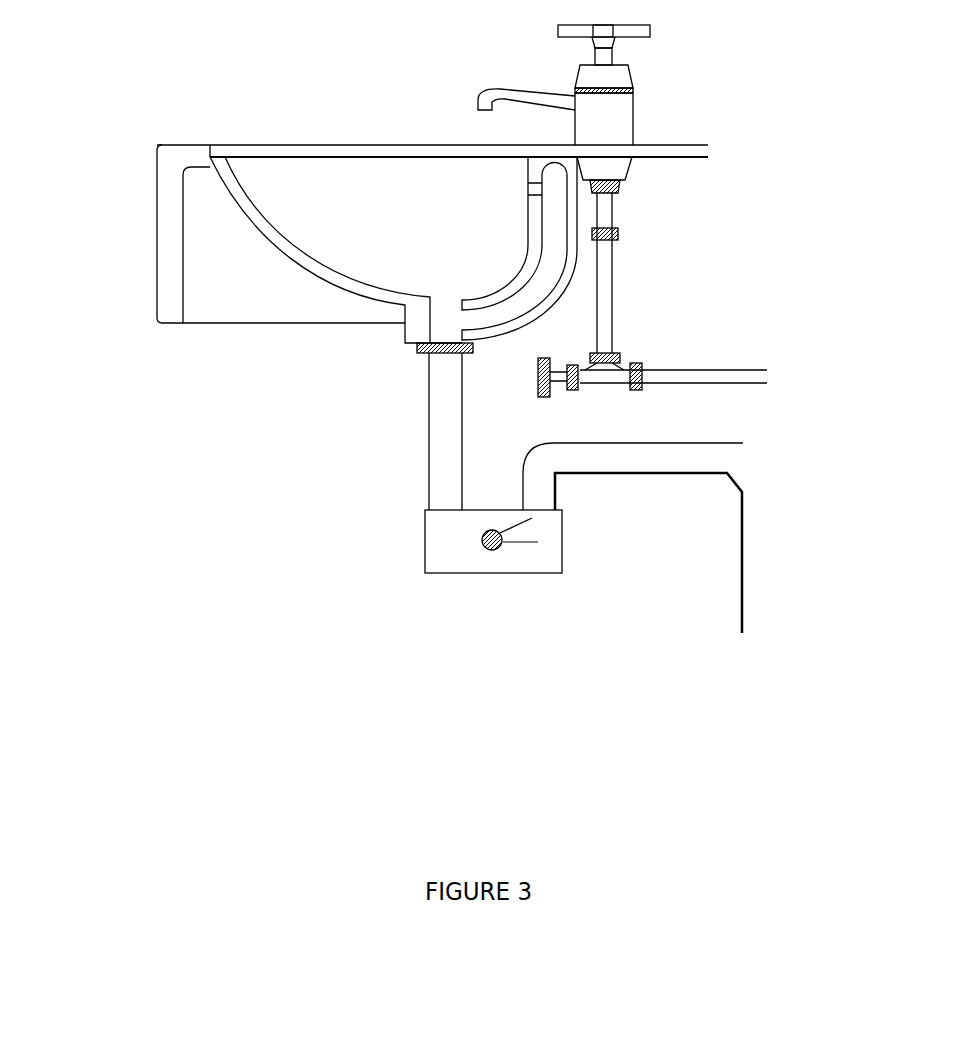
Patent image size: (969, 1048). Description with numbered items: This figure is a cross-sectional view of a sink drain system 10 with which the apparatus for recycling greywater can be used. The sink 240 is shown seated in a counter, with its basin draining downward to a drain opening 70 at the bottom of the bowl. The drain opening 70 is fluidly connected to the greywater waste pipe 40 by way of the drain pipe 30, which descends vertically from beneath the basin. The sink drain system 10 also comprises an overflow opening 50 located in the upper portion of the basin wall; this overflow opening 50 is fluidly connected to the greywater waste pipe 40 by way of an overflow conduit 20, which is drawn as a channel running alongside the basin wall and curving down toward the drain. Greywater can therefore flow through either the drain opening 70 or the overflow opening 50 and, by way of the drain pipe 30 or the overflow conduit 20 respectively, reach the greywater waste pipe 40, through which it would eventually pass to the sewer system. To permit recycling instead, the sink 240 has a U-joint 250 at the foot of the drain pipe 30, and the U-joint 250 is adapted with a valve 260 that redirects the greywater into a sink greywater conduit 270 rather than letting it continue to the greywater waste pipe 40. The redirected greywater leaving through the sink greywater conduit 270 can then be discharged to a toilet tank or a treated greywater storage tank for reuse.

The sink drain system 10 is at (338, 62).
The overflow conduit 20 is at (538, 250).
The drain pipe 30 is at (432, 410).
The greywater waste pipe 40 is at (648, 444).
The overflow opening 50 is at (518, 183).
The drain opening 70 is at (448, 292).
The sink 240 is at (183, 137).
The U-joint 250 is at (416, 540).
The valve 260 is at (487, 558).
The sink greywater conduit 270 is at (732, 593).